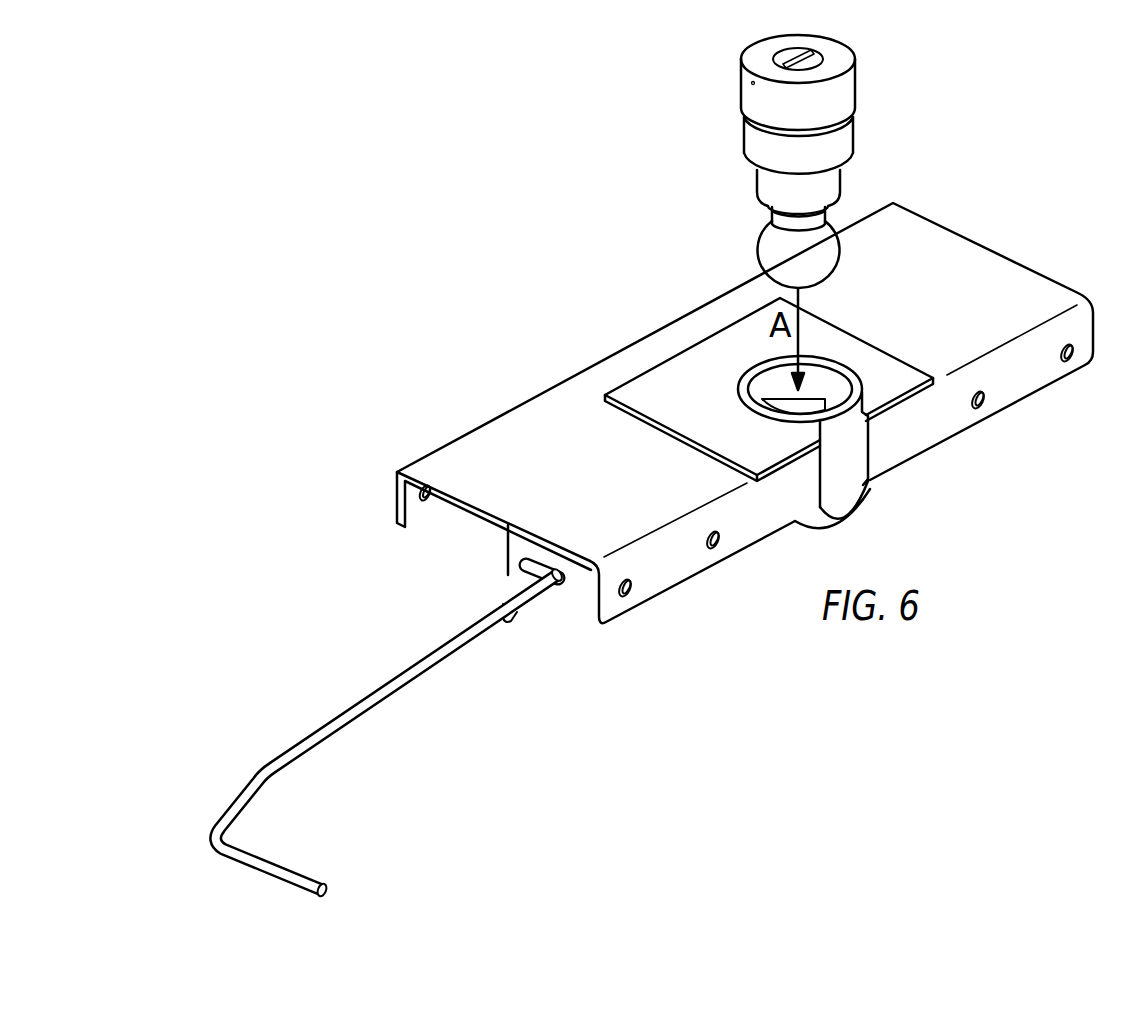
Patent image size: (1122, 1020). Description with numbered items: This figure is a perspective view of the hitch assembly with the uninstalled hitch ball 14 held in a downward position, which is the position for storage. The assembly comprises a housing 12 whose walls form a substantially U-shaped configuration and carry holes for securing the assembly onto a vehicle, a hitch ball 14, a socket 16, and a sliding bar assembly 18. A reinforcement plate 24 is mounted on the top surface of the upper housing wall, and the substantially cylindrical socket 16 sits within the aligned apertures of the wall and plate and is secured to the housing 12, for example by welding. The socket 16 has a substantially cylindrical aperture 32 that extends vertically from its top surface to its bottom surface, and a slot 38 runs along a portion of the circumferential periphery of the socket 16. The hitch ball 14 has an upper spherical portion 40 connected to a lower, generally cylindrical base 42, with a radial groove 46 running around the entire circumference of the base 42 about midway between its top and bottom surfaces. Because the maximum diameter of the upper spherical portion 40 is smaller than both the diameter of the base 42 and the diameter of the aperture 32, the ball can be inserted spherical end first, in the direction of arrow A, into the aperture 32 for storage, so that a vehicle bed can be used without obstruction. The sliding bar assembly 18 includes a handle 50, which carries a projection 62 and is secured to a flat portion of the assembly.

The housing 12 is at (471, 510).
The hitch ball 14 is at (801, 161).
The socket 16 is at (833, 405).
The sliding bar assembly 18 is at (390, 732).
The reinforcement plate 24 is at (696, 403).
The aperture 32 is at (847, 368).
The slot 38 is at (812, 398).
The upper spherical portion 40 is at (812, 273).
The base 42 is at (724, 82).
The radial groove 46 is at (855, 106).
The handle 50 is at (340, 732).
The projection 62 is at (518, 614).